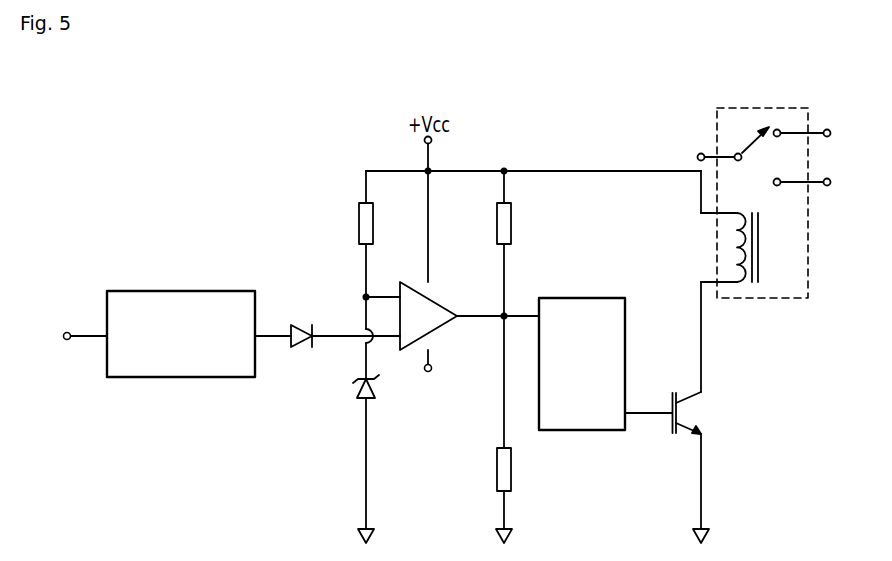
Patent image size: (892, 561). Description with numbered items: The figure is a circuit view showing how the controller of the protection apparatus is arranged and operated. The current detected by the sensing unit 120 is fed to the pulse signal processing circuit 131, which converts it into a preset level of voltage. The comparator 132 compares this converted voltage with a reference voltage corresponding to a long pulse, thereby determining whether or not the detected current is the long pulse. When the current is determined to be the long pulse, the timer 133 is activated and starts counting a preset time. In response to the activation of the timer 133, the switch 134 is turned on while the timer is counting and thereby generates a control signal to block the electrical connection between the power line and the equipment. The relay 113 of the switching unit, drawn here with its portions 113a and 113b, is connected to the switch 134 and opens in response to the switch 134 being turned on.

The sensing unit 120 is at (71, 336).
The pulse signal processing circuit 131 is at (180, 291).
The comparator 132 is at (440, 303).
The timer 133 is at (582, 298).
The switch 134 is at (705, 413).
The relay 113 is at (746, 204).
The relay switch contact 113a is at (698, 152).
The relay coil 113b is at (734, 282).